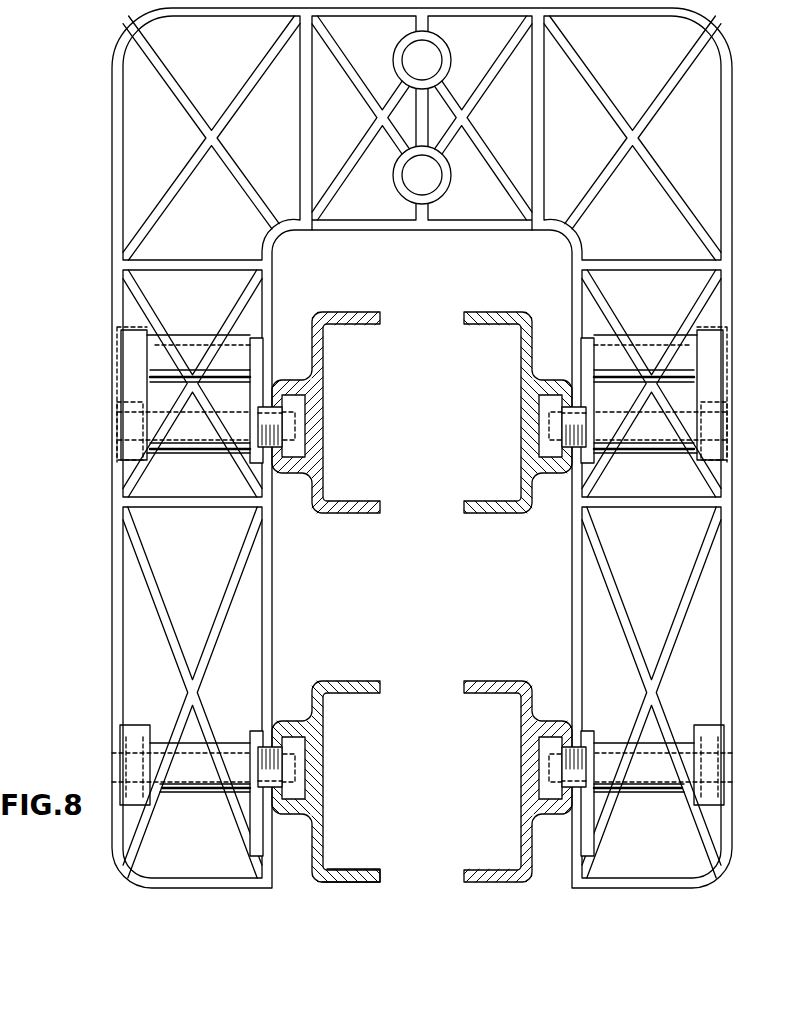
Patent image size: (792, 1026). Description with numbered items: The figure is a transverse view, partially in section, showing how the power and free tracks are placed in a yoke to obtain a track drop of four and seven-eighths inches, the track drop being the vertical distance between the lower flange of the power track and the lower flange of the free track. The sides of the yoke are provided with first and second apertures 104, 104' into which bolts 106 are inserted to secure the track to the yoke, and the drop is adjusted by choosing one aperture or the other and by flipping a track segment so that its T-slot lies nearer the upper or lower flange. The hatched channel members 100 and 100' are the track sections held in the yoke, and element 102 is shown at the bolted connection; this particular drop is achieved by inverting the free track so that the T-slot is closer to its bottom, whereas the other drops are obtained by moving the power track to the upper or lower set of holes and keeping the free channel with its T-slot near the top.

The channel member 100 is at (330, 761).
The channel member flange 100' is at (367, 850).
The fastener nut 102 is at (306, 768).
The first aperture 104 is at (420, 394).
The second aperture 104' is at (424, 437).
The bolt 106 is at (135, 421).